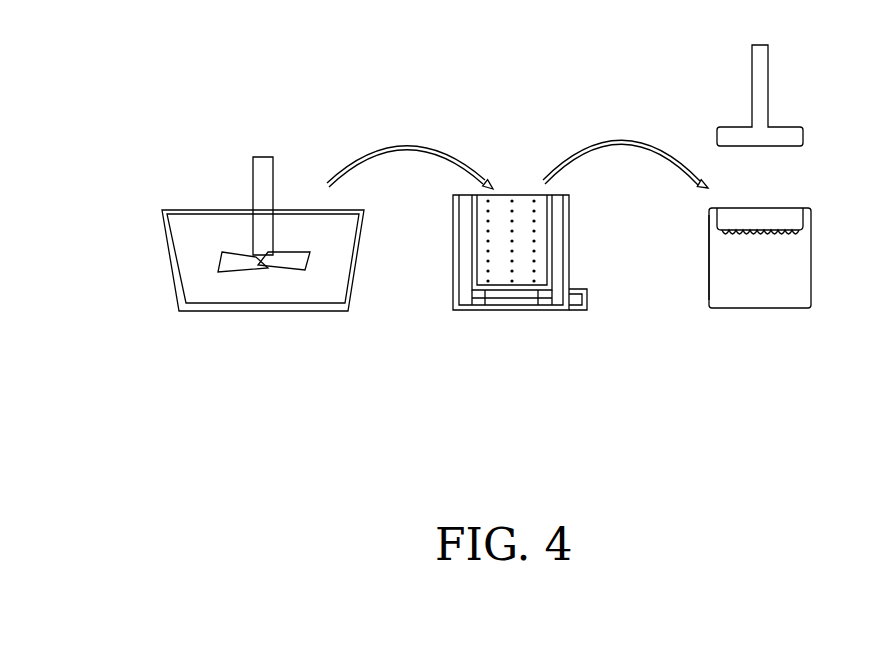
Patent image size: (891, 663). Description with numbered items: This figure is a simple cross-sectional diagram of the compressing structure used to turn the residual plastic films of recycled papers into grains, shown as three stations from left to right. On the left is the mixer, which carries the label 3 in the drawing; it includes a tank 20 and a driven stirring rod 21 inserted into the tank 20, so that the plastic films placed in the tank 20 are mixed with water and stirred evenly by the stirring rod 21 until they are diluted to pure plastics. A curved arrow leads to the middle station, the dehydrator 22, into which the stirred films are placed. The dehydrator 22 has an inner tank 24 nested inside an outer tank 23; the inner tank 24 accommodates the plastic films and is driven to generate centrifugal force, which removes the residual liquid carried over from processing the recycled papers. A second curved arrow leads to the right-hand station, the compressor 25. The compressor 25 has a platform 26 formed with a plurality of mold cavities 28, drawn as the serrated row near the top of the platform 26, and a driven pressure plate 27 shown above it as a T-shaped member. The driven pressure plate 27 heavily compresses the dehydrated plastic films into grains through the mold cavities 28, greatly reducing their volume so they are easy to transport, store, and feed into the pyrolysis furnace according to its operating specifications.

The mixture 3 is at (210, 207).
The tank 20 is at (237, 313).
The driven stirring rod 21 is at (262, 187).
The dehydrator 22 is at (525, 222).
The outer tank 23 is at (523, 312).
The inner tank 24 is at (485, 248).
The compressor 25 is at (736, 276).
The platform 26 is at (708, 252).
The driven pressure plate 27 is at (787, 122).
The mold cavities 28 is at (793, 224).